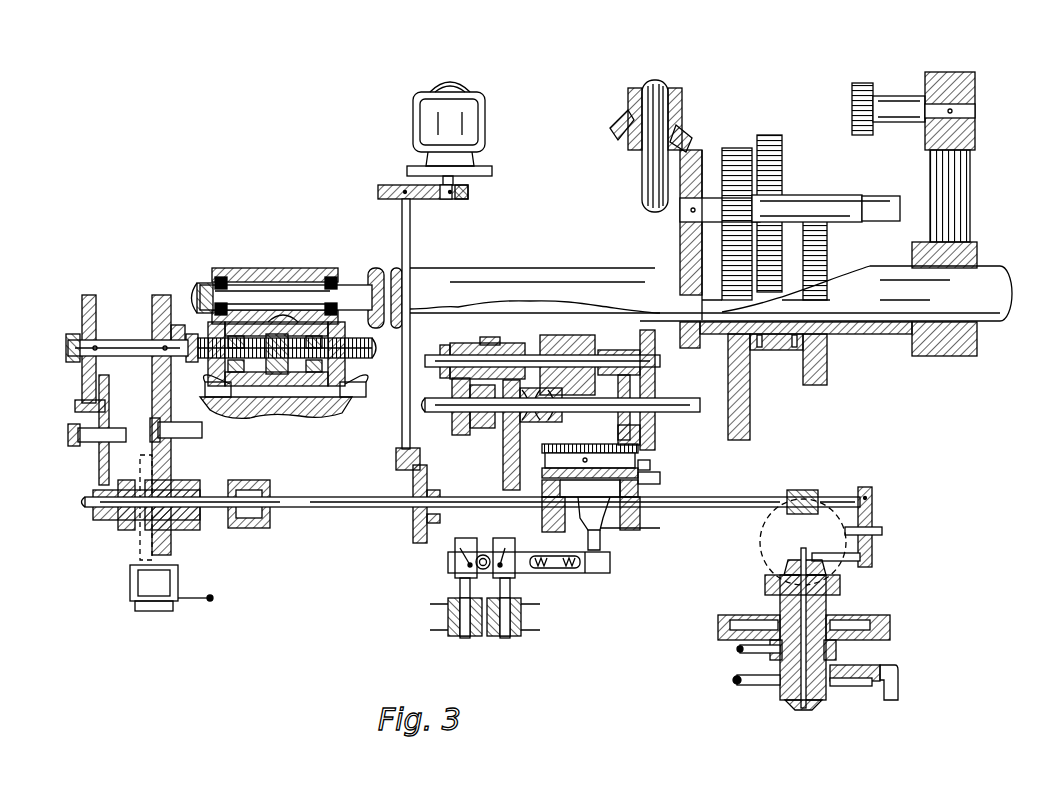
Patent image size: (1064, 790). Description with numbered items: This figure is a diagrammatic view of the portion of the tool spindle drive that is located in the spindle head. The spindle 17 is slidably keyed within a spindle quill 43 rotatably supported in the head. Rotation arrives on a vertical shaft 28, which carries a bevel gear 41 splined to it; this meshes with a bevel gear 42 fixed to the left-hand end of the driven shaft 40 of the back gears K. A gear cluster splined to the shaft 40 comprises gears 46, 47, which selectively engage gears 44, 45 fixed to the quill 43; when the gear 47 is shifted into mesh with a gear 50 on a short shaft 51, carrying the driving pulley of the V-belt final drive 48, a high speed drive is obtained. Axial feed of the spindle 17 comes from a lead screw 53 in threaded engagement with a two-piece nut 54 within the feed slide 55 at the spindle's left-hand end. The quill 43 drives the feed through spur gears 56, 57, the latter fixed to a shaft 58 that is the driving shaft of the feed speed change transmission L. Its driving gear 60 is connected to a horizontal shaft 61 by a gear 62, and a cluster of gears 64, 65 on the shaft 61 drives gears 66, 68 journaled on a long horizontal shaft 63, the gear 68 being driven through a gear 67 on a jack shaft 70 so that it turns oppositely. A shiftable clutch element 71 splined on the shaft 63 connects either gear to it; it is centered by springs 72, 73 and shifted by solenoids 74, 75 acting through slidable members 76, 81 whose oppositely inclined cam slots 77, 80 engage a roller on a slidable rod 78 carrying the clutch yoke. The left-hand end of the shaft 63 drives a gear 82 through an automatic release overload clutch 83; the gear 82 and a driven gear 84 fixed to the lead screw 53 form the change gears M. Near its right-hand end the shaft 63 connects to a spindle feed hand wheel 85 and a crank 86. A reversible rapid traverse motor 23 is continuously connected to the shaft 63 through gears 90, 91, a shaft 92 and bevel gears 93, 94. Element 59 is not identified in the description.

The spindle 17 is at (1000, 302).
The spindle rapid traverse motor 23 is at (418, 118).
The vertical shaft 28 is at (642, 190).
The driven shaft of the back gears 40 is at (840, 197).
The bevel gear 41 is at (681, 110).
The bevel gear 42 is at (701, 150).
The spindle quill 43 is at (893, 335).
The gear 44 is at (750, 420).
The gear 45 is at (828, 380).
The gear 46 is at (723, 170).
The gear 47 is at (772, 190).
The V-belt final drive 48 is at (963, 205).
The gear 50 is at (862, 83).
The short shaft 51 is at (900, 123).
The lead screw 53 is at (358, 352).
The two-piece nut 54 is at (290, 372).
The feed slide 55 is at (280, 268).
The spur gear 56 is at (700, 346).
The spur gear 57 is at (656, 440).
The shaft 58 is at (672, 412).
The upper shaft hubs 59 is at (542, 365).
The gear 60 is at (482, 446).
The horizontal shaft 61 is at (533, 458).
The gear 62 is at (505, 478).
The horizontal shaft 63 is at (398, 508).
The gear 64 is at (548, 420).
The gear 65 is at (640, 441).
The gear 66 is at (545, 530).
The gear 67 is at (651, 466).
The gear 68 is at (640, 532).
The jack shaft 70 is at (660, 480).
The shiftable clutch element 71 is at (590, 522).
The spring 72 is at (550, 569).
The spring 73 is at (606, 570).
The electric solenoid 74 is at (460, 636).
The electric solenoid 75 is at (505, 636).
The slidable member 76 is at (472, 531).
The inclined cam slot 77 is at (448, 560).
The slidable rod 78 is at (448, 571).
The cam slot 80 is at (515, 570).
The slidable member 81 is at (505, 540).
The gear 82 is at (190, 490).
The automatic release overload clutch 83 is at (258, 528).
The driven gear 84 is at (164, 296).
The spindle feed hand wheel 85 is at (737, 684).
The crank 86 is at (898, 693).
The gear 90 is at (457, 200).
The gear 91 is at (378, 191).
The shaft 92 is at (410, 248).
The bevel gear 93 is at (396, 460).
The bevel gear 94 is at (415, 542).
The back gears K is at (783, 160).
The feed speed change transmission L is at (525, 341).
The change gears M is at (200, 404).